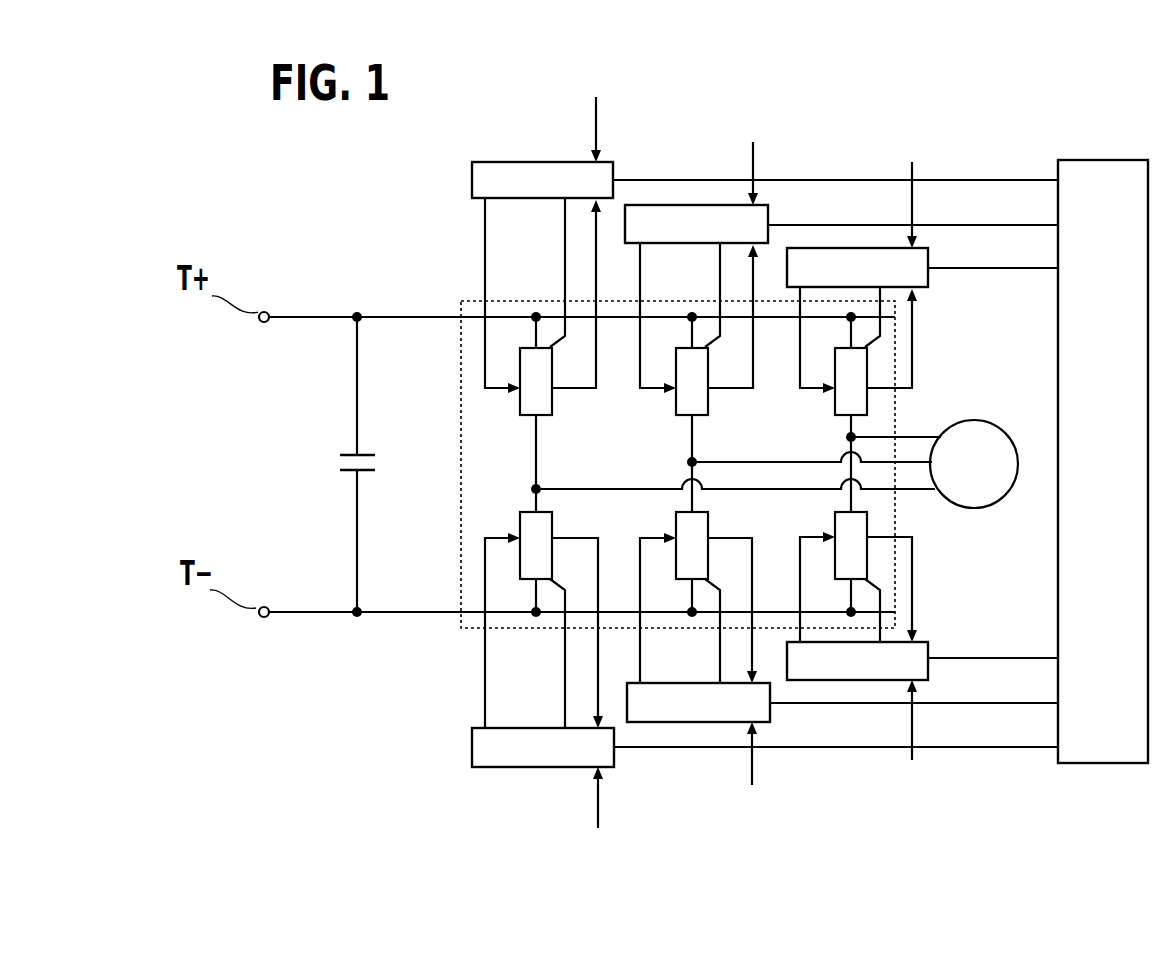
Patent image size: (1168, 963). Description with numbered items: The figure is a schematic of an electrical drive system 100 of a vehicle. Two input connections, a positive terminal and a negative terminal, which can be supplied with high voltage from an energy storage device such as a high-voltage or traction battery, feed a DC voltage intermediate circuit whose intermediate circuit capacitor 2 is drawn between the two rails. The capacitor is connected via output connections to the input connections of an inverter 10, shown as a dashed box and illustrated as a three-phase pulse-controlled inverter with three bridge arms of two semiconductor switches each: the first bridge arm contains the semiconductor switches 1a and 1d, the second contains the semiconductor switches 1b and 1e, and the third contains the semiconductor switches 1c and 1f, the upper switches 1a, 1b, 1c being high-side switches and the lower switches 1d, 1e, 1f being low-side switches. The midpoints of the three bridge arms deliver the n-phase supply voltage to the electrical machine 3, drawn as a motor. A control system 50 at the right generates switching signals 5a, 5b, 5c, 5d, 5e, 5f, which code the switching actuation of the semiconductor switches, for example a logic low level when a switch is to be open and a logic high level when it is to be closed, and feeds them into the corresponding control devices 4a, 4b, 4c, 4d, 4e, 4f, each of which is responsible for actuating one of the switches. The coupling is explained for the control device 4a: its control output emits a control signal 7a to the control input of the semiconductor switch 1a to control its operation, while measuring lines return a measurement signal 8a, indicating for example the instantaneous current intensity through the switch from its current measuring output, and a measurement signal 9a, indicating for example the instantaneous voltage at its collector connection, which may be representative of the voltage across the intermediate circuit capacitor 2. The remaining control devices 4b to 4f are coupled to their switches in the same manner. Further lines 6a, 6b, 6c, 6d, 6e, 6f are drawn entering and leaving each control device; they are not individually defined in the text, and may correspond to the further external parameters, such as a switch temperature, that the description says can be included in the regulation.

The electrical drive system 100 is at (310, 237).
The intermediate circuit capacitor 2 is at (340, 462).
The inverter 10 is at (461, 362).
The semiconductor switch 1a is at (520, 402).
The semiconductor switch 1b is at (676, 410).
The semiconductor switch 1c is at (835, 410).
The semiconductor switch 1d is at (520, 518).
The semiconductor switch 1e is at (676, 522).
The semiconductor switch 1f is at (835, 522).
The electrical machine 3 is at (975, 435).
The control system 50 is at (1058, 544).
The control device 4a is at (530, 162).
The control device 4b is at (707, 205).
The control device 4c is at (862, 248).
The control device 4d is at (517, 767).
The control device 4e is at (695, 722).
The control device 4f is at (870, 680).
The switching signal 5a is at (1018, 180).
The switching signal 5b is at (962, 223).
The switching signal 5c is at (1027, 268).
The switching signal 5d is at (963, 658).
The switching signal 5e is at (1016, 703).
The switching signal 5f is at (1025, 747).
The drive signal input line 6a is at (596, 113).
The drive signal input line 6b is at (753, 150).
The drive signal input line 6c is at (912, 168).
The drive signal input line 6d is at (598, 810).
The drive signal input line 6e is at (752, 785).
The drive signal input line 6f is at (912, 760).
The control signal 7a is at (485, 236).
The measurement signal 8a is at (565, 282).
The measurement signal 9a is at (596, 243).